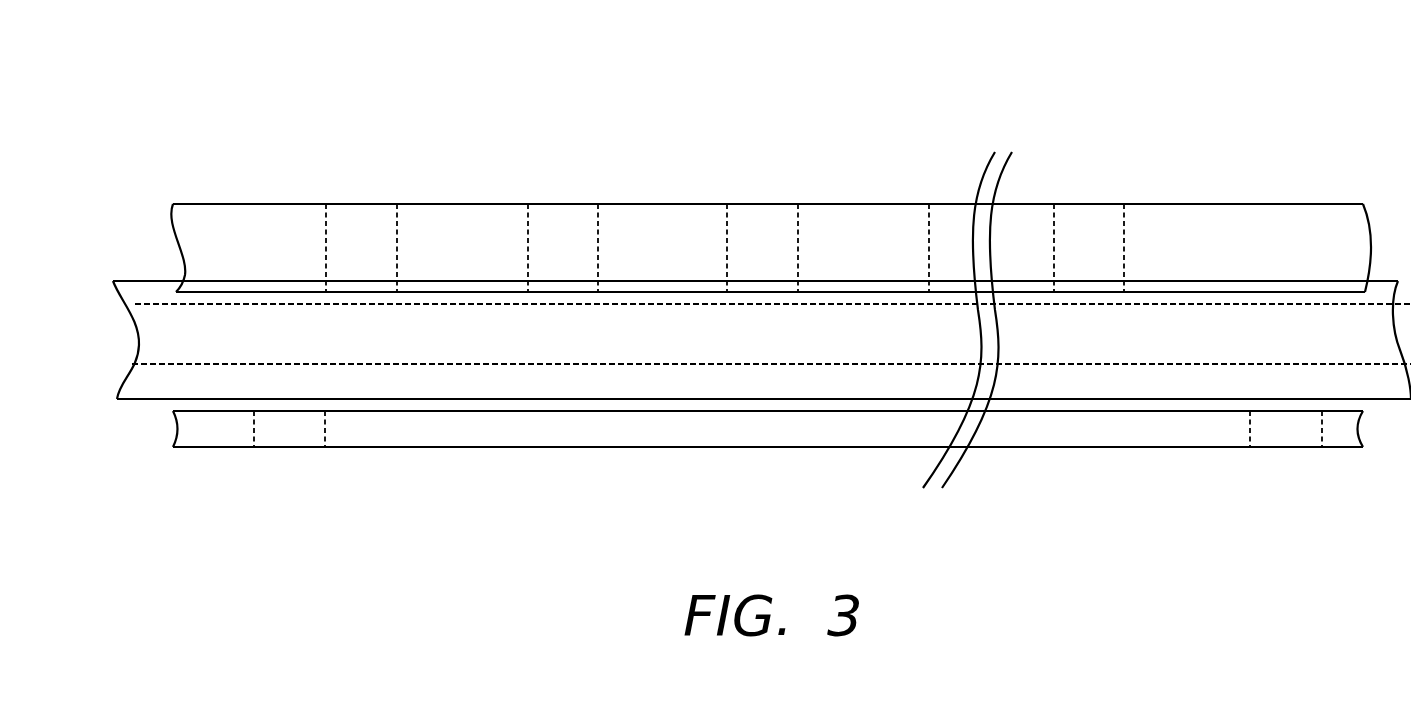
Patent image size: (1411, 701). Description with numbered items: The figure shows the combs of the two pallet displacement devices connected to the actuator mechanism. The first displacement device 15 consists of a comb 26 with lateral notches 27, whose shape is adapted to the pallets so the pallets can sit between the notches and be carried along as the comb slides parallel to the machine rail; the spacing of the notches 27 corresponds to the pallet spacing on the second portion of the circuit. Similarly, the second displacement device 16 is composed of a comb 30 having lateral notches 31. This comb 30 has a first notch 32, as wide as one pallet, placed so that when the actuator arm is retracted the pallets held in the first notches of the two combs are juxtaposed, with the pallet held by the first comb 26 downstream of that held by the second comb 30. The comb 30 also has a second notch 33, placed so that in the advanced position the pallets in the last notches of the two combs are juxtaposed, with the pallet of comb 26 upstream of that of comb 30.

The first displacement device 15 is at (258, 204).
The lateral notches 27 is at (373, 233).
The comb 26 is at (1183, 223).
The second displacement device 16 is at (209, 447).
The comb 30 is at (875, 433).
The lateral notches 31 is at (292, 452).
The first notch 32 is at (302, 428).
The second notch 33 is at (1275, 429).